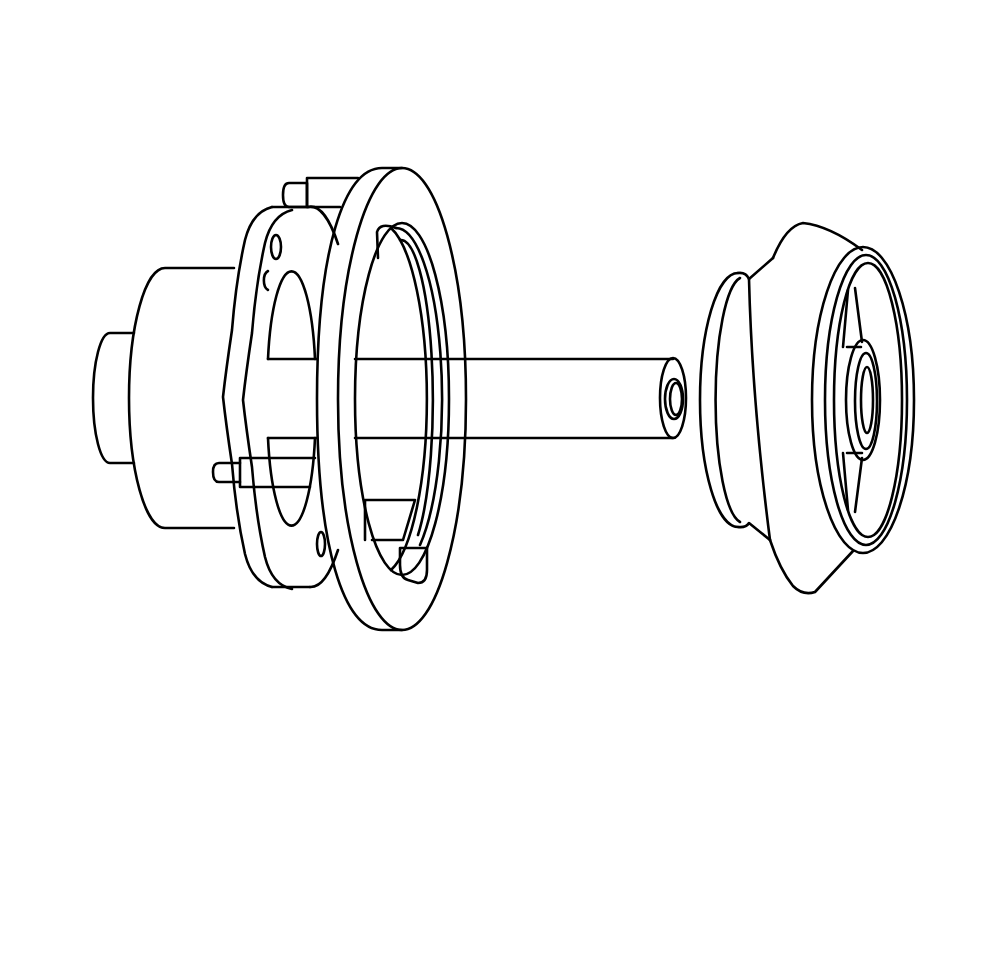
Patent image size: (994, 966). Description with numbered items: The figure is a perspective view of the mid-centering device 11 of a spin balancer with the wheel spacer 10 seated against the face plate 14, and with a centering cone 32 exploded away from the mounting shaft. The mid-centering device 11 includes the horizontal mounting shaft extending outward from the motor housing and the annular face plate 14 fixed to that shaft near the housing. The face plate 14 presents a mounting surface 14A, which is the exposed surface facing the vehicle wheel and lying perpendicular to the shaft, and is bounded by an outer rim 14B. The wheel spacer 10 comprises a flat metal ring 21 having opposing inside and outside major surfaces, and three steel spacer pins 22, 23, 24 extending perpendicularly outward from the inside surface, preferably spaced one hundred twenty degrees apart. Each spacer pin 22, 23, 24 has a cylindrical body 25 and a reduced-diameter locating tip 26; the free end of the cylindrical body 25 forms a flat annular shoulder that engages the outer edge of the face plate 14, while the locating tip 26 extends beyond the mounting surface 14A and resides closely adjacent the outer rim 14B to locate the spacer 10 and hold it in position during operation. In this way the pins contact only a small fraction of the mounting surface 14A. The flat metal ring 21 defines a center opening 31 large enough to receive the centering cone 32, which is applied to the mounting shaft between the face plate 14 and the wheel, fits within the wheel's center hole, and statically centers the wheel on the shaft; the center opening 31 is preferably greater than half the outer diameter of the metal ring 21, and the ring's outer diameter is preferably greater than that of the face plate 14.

The wheel spacer 10 is at (428, 152).
The mid-centering device 11 is at (90, 315).
The face plate 14 is at (221, 333).
The mounting surface 14A is at (240, 258).
The outer rim 14B is at (225, 374).
The flat metal ring 21 is at (410, 209).
The spacer pin 22 is at (337, 160).
The spacer pin 23 is at (265, 505).
The spacer pin 24 is at (400, 488).
The cylindrical body 25 is at (320, 185).
The locating tip 26 is at (283, 188).
The center opening 31 is at (424, 272).
The centering cone 32 is at (810, 250).